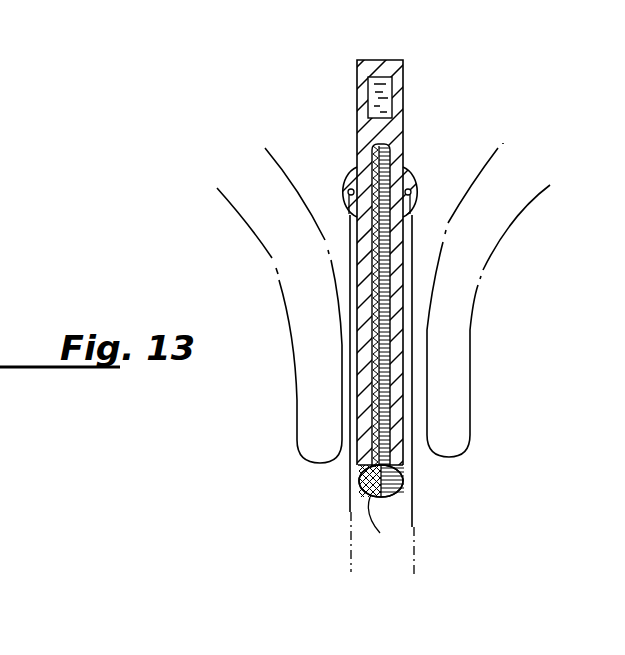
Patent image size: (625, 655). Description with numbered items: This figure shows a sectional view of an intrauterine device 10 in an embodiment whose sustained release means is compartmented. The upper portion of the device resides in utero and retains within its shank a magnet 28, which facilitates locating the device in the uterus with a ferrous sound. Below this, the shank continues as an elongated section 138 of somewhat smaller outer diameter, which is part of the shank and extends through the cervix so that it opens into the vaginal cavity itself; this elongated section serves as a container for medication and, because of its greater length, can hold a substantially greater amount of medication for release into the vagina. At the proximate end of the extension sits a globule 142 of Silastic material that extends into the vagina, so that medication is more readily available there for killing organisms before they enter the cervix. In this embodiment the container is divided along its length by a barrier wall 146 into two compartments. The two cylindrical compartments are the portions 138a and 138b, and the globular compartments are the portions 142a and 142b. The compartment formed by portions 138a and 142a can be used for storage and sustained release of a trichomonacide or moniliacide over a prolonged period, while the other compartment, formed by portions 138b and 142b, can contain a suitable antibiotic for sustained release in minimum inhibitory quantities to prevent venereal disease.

The intrauterine device 10 is at (407, 126).
The magnet 28 is at (383, 80).
The elongated shank section 138 is at (382, 305).
The first cylindrical compartment 138a is at (372, 348).
The second cylindrical compartment 138b is at (388, 365).
The globule 142 is at (361, 508).
The first globular compartment 142a is at (360, 488).
The second globular compartment 142b is at (428, 497).
The barrier wall 146 is at (380, 531).